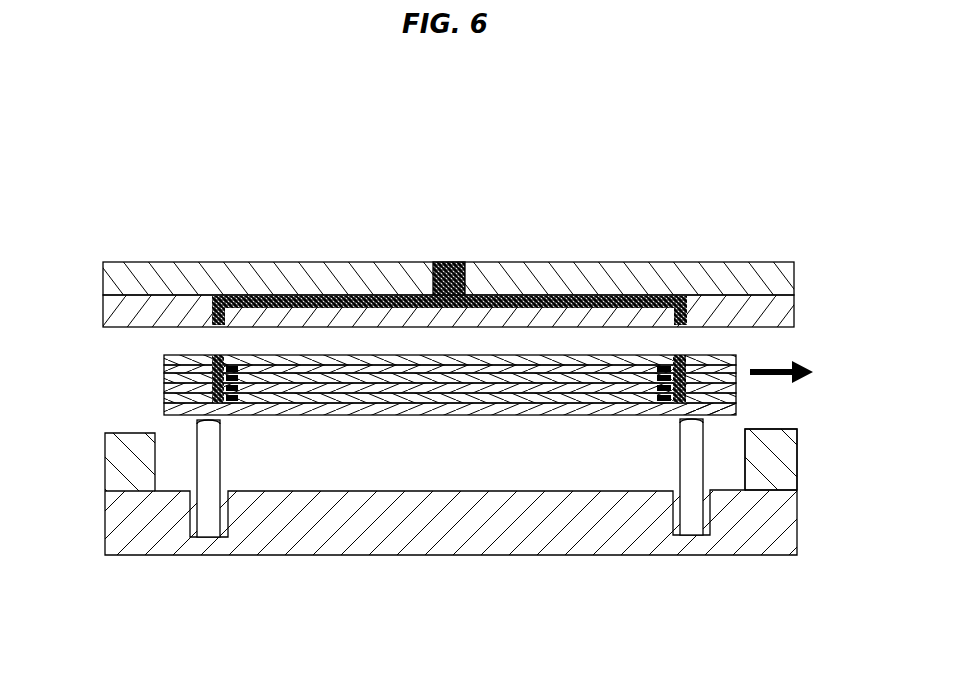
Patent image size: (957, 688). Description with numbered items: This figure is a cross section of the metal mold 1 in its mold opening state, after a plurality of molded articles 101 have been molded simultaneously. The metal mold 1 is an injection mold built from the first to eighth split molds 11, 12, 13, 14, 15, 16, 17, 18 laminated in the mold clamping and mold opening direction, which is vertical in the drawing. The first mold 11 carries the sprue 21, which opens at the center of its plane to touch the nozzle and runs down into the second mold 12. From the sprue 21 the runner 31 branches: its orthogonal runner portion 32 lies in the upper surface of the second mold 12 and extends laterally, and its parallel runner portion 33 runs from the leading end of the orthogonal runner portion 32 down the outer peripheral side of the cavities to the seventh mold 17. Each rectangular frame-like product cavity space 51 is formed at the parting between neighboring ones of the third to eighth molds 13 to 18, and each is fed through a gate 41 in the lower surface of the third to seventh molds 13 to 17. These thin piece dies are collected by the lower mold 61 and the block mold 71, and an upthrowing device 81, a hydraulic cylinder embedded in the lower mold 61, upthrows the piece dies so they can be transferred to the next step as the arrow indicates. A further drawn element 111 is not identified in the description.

The metal mold 1 is at (181, 240).
The first mold 11 is at (103, 273).
The second mold 12 is at (103, 306).
The third mold 13 is at (268, 296).
The fourth mold 14 is at (340, 375).
The fifth mold 15 is at (360, 405).
The sixth mold 16 is at (380, 400).
The seventh mold 17 is at (393, 402).
The eighth mold 18 is at (420, 415).
The sprue 21 is at (447, 262).
The runner 31 is at (537, 295).
The orthogonal runner portion 32 is at (583, 295).
The parallel runner portion 33 is at (508, 402).
The gate 41 is at (684, 428).
The product cavity space 51 is at (678, 412).
The lower mold 61 is at (500, 540).
The block mold 71 is at (787, 462).
The upthrowing device 81 is at (210, 533).
The molded article 101 is at (664, 370).
The connection bars 111 is at (686, 355).